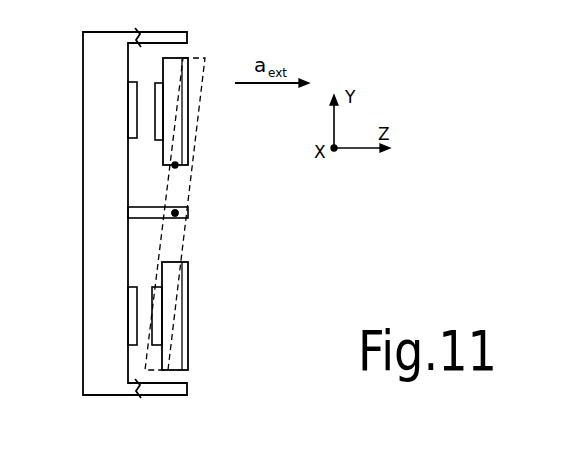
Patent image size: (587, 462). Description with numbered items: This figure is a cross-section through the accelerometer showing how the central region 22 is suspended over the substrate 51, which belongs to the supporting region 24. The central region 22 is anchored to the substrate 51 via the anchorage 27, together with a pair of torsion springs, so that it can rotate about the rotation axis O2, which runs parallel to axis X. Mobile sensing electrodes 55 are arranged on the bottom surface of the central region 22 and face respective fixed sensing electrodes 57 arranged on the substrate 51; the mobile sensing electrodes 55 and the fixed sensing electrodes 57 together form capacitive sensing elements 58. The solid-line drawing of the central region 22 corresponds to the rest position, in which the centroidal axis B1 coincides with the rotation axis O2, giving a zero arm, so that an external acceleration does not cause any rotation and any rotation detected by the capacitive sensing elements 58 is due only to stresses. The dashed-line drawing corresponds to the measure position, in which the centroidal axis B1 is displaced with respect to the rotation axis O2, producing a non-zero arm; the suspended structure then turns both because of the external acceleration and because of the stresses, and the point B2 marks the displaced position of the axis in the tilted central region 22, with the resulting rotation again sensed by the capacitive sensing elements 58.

The substrate 51 is at (90, 193).
The fixed sensing electrodes 57 is at (133, 109).
The mobile sensing electrodes 55 is at (155, 83).
The anchorage 27 is at (128, 212).
The central region 22 is at (181, 309).
The capacitive sensing elements 58 is at (147, 84).
The supporting region 24 is at (157, 396).
The rotation axis O2 is at (190, 211).
The centroidal axis B1 is at (175, 213).
The point B2 is at (175, 165).